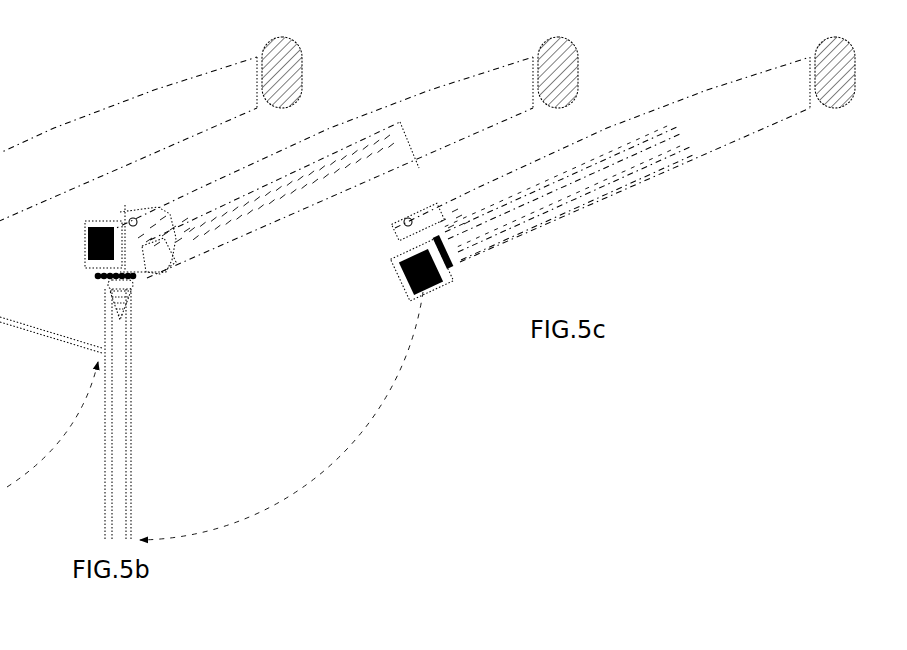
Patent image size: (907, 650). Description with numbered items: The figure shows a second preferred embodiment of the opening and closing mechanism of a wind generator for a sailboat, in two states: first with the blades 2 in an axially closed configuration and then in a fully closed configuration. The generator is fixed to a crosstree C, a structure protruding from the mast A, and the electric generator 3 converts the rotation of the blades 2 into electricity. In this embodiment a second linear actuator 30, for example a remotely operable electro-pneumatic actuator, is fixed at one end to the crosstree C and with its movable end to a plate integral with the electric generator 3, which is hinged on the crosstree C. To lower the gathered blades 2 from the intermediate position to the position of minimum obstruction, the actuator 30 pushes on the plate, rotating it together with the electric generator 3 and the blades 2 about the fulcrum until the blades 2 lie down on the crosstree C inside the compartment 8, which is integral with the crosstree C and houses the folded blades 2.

In FIG. 5B, the blades 2 is at (131, 421).
In FIG. 5C, the blades 2 is at (525, 226).
In FIG. 5B, the electric generator 3 is at (88, 225).
In FIG. 5C, the electric generator 3 is at (405, 297).
In FIG. 5C, the compartment 8 is at (562, 216).
In FIG. 5B, the second linear actuator 30 is at (161, 218).
In FIG. 5C, the second linear actuator 30 is at (437, 218).
In FIG. 5B, the crosstree C is at (162, 87).
In FIG. 5C, the crosstree C is at (439, 87).
In FIG. 5B, the mast A is at (305, 70).
In FIG. 5C, the mast A is at (581, 70).